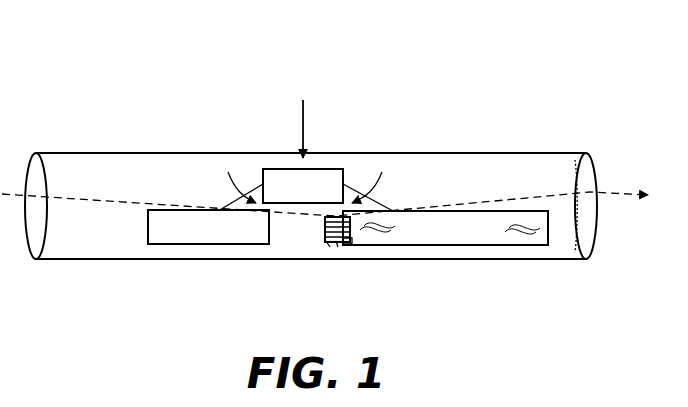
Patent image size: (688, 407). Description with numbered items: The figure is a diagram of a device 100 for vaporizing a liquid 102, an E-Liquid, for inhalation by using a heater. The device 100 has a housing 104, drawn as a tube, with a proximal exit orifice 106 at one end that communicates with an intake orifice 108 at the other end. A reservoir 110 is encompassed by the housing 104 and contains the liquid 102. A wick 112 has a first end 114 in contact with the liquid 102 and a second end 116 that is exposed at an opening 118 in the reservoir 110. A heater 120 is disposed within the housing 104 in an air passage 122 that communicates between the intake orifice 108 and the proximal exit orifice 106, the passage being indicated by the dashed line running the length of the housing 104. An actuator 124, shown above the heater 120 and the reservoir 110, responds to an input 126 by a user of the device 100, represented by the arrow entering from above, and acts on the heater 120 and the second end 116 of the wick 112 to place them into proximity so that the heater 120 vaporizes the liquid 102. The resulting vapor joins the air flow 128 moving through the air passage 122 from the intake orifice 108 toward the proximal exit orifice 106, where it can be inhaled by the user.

The device 100 is at (126, 68).
The liquid 102 is at (503, 228).
The housing 104 is at (213, 152).
The proximal exit orifice 106 is at (588, 153).
The intake orifice 108 is at (38, 153).
The reservoir 110 is at (400, 248).
The wick 112 is at (326, 244).
The first end 114 is at (352, 246).
The second end 116 is at (322, 240).
The opening 118 is at (338, 246).
The heater 120 is at (208, 246).
The air passage 122 is at (398, 155).
The actuator 124 is at (284, 168).
The input 126 is at (305, 130).
The air flow 128 is at (555, 193).